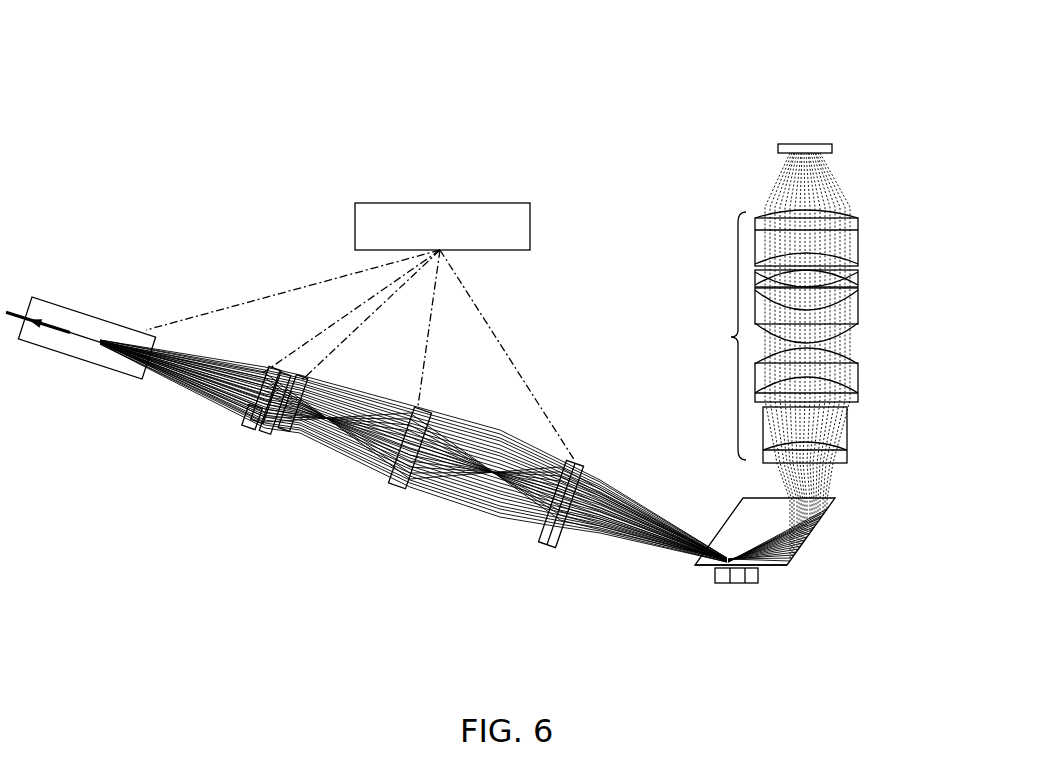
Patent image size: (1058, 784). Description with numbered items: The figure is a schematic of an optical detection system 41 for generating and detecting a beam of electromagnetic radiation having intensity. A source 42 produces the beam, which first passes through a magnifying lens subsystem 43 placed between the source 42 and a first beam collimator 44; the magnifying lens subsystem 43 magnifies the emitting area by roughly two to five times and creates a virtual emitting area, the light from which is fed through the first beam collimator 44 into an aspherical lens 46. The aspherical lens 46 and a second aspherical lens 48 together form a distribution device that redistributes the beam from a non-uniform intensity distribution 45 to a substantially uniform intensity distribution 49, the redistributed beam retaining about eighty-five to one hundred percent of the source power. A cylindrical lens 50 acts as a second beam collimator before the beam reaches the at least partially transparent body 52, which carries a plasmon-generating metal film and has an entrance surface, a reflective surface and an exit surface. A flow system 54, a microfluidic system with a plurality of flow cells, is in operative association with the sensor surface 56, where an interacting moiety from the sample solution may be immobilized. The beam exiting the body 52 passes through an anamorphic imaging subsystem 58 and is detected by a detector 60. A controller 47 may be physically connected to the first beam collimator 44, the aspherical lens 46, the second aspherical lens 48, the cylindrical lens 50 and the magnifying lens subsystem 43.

The optical detection system 41 is at (184, 61).
The source 42 is at (21, 308).
The magnifying lens subsystem 43 is at (121, 327).
The first beam collimator 44 is at (263, 368).
The non-uniform intensity distribution 45 is at (262, 425).
The aspherical lens 46 is at (303, 383).
The controller 47 is at (444, 203).
The second aspherical lens 48 is at (420, 410).
The substantially uniform intensity distribution 49 is at (463, 500).
The cylindrical lens 50 is at (577, 462).
The body 52 is at (740, 522).
The flow system 54 is at (760, 577).
The sensor surface 56 is at (697, 563).
The anamorphic imaging subsystem 58 is at (735, 337).
The detector 60 is at (778, 149).